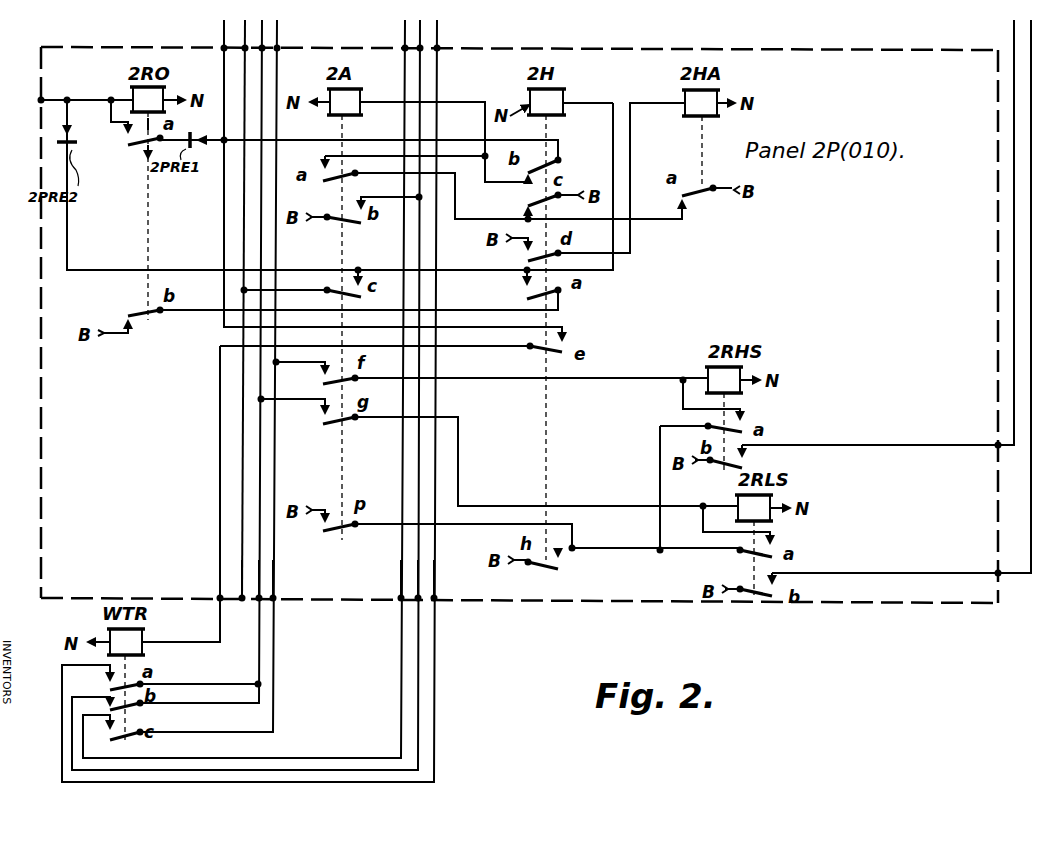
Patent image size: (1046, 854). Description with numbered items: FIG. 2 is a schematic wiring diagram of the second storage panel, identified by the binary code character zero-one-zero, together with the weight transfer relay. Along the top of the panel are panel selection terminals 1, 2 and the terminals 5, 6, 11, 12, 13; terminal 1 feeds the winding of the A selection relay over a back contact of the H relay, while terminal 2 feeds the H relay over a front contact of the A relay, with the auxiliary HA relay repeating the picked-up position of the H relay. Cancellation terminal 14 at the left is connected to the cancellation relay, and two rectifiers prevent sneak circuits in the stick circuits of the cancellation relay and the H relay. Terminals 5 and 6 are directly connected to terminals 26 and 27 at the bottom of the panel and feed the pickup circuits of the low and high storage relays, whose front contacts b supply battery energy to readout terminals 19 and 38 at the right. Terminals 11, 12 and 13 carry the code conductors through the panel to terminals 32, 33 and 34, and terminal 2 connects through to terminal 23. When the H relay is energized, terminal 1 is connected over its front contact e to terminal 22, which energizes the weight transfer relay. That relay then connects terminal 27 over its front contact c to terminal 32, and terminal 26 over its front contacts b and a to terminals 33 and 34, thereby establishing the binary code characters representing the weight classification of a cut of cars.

The panel selection terminal 1 is at (222, 46).
The panel selection terminal 2 is at (244, 46).
The terminal 5 is at (262, 46).
The terminal 6 is at (278, 46).
The terminal 11 is at (403, 46).
The terminal 12 is at (421, 46).
The terminal 13 is at (438, 47).
The cancellation terminal 14 is at (40, 100).
The readout terminal 19 is at (996, 444).
The terminal 22 is at (218, 597).
The terminal 23 is at (235, 596).
The terminal 26 is at (260, 597).
The terminal 27 is at (274, 598).
The terminal 32 is at (400, 598).
The terminal 33 is at (417, 597).
The terminal 34 is at (435, 598).
The readout terminal 38 is at (996, 572).